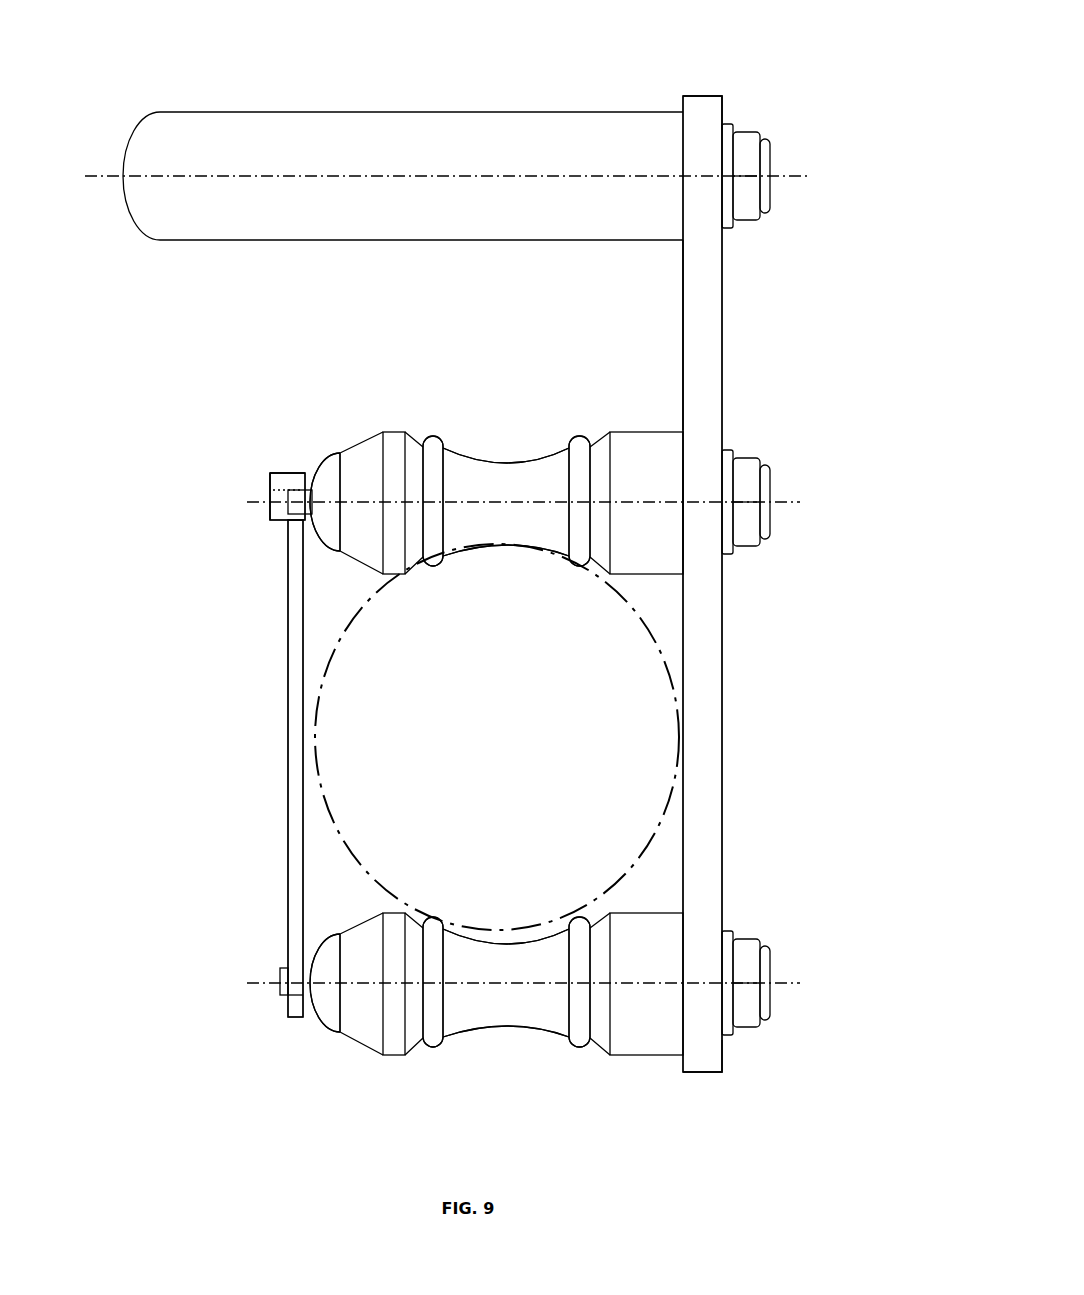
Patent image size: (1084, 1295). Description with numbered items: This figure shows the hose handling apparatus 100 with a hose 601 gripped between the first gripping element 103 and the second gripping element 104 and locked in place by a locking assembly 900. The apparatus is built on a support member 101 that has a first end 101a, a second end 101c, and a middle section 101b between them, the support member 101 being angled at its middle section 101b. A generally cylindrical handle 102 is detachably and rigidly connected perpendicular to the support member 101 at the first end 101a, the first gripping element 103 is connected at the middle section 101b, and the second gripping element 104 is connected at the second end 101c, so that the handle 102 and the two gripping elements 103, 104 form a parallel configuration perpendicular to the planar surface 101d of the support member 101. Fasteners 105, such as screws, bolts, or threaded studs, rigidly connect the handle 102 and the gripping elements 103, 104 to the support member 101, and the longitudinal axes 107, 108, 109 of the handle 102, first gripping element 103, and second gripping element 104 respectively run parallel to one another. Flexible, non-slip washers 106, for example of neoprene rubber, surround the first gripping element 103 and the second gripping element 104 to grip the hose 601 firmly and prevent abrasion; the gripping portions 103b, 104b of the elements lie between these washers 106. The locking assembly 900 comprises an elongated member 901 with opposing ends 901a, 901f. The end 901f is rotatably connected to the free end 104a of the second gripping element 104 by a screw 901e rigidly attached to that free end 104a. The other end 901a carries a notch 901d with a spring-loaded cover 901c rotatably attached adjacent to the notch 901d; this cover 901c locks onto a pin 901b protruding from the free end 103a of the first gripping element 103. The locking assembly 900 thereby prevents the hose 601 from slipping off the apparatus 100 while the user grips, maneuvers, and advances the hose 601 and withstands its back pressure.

The hose handling apparatus 100 is at (716, 70).
The support member 101 is at (680, 95).
The first end of the support member 101a is at (730, 100).
The middle section of the support member 101b is at (697, 517).
The second end of the support member 101c is at (730, 1063).
The planar surface of the support member 101d is at (679, 283).
The generally cylindrical handle 102 is at (377, 110).
The first generally cylindrical curvilinear gripping element 103 is at (596, 428).
The free end of the first gripping element 103a is at (319, 449).
The neck of upper bushing 103b is at (526, 527).
The second generally cylindrical curvilinear gripping element 104 is at (599, 1070).
The free end of the second gripping element 104a is at (318, 1006).
The neck of lower bushing 104b is at (524, 1007).
The fasteners 105 is at (750, 932).
The generally circular washers 106 is at (573, 438).
The longitudinal axis of the handle 107 is at (91, 182).
The longitudinal axis of the first gripping element 108 is at (262, 512).
The longitudinal axis of the second gripping element 109 is at (257, 986).
The hose 601 is at (646, 862).
The locking assembly 900 is at (268, 722).
The elongated member 901 is at (296, 793).
The opposing end of the elongated member 901a is at (296, 475).
The pin 901b is at (289, 489).
The spring-loaded cover 901c is at (268, 493).
The notch 901d is at (297, 521).
The screw 901e is at (275, 971).
The opposing end of the elongated member 901f is at (292, 997).